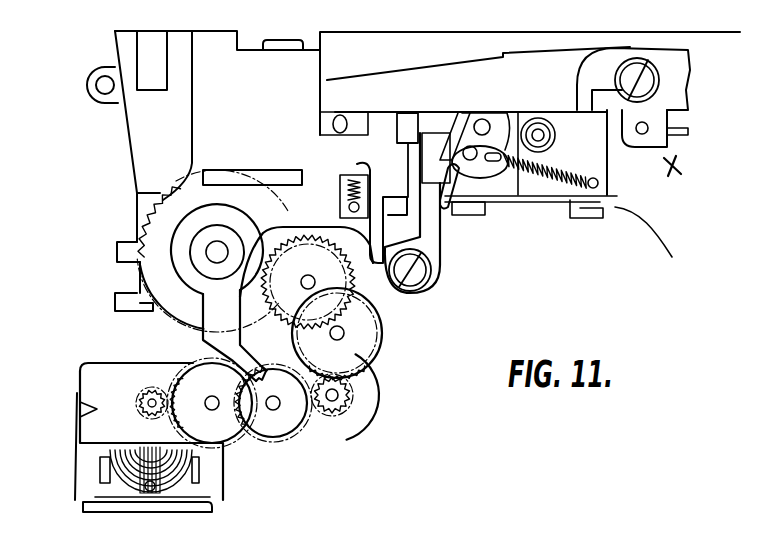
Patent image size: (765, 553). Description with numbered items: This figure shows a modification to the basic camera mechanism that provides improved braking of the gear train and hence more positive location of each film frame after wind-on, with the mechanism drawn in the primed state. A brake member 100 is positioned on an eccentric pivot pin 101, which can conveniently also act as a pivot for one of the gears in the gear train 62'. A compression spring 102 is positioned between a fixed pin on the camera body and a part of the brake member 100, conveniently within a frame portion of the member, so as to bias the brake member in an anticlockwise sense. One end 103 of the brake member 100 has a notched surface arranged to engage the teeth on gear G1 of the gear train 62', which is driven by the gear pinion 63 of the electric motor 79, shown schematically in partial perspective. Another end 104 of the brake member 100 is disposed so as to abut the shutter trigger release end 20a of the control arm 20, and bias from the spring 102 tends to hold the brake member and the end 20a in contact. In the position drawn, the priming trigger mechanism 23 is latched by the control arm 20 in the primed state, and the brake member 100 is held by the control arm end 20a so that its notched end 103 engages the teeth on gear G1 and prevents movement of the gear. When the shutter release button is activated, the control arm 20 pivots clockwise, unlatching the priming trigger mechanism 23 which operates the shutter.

The control arm 20 is at (537, 73).
The shutter trigger release end 20a is at (382, 118).
The priming trigger mechanism 23 is at (430, 216).
The gear train 62' is at (343, 338).
The gear pinion 63 is at (148, 415).
The electric motor 79 is at (95, 383).
The brake member 100 is at (218, 322).
The eccentric pivot pin 101 is at (198, 245).
The compression spring 102 is at (327, 178).
The notched end 103 is at (306, 304).
The other end of brake member 104 is at (383, 163).
The gear G1 is at (223, 427).